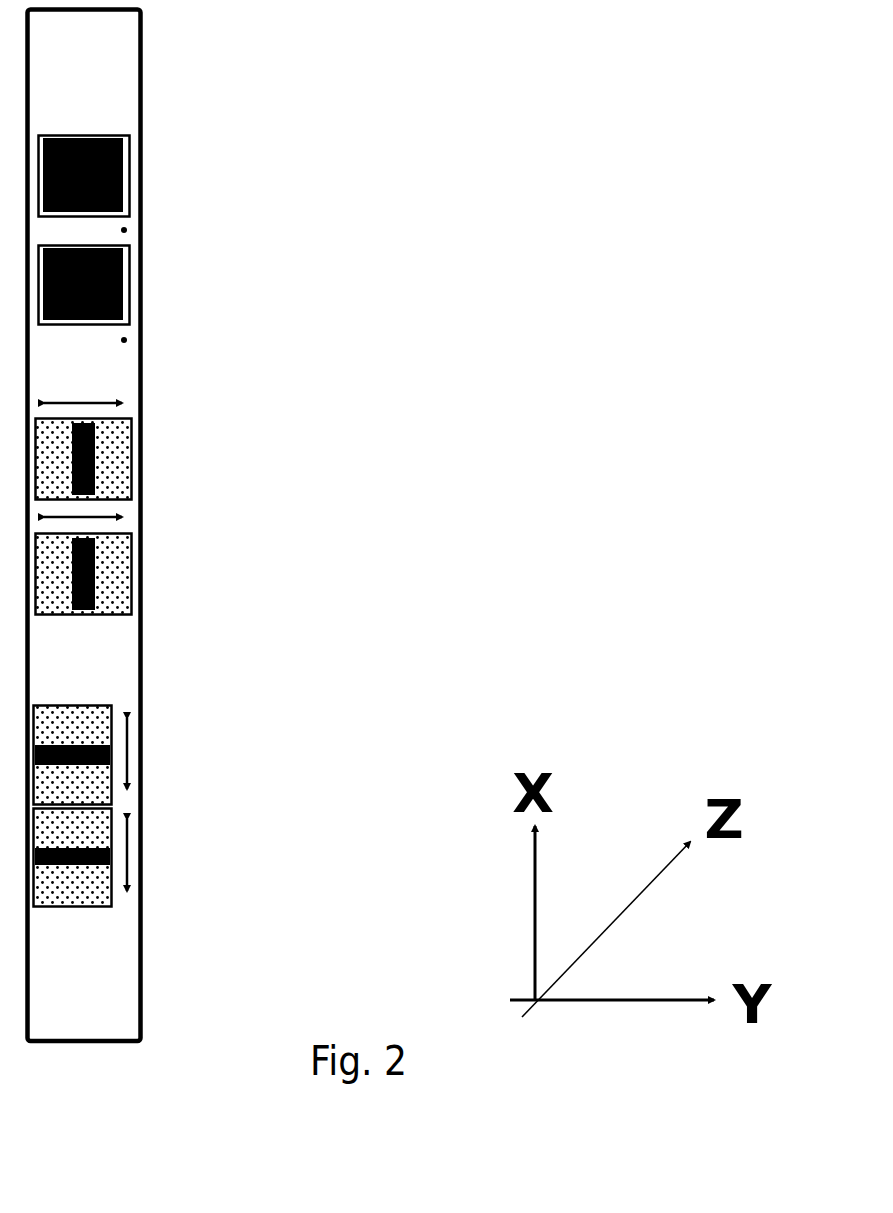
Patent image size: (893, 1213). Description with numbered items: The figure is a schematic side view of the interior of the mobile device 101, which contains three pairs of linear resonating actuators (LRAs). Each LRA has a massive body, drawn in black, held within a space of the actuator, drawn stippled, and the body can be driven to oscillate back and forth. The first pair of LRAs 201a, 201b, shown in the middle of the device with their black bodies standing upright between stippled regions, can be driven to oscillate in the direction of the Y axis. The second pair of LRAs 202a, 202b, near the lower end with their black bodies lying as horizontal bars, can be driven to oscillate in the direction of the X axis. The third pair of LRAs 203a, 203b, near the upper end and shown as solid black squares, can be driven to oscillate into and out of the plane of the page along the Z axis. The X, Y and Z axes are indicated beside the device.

The mobile device 101 is at (123, 103).
The linear resonating actuator of the third pair 203a is at (127, 190).
The linear resonating actuator of the third pair 203b is at (128, 292).
The linear resonating actuator of the first pair 201a is at (117, 463).
The linear resonating actuator of the first pair 201b is at (123, 560).
The linear resonating actuator of the second pair 202a is at (113, 755).
The linear resonating actuator of the second pair 202b is at (113, 858).